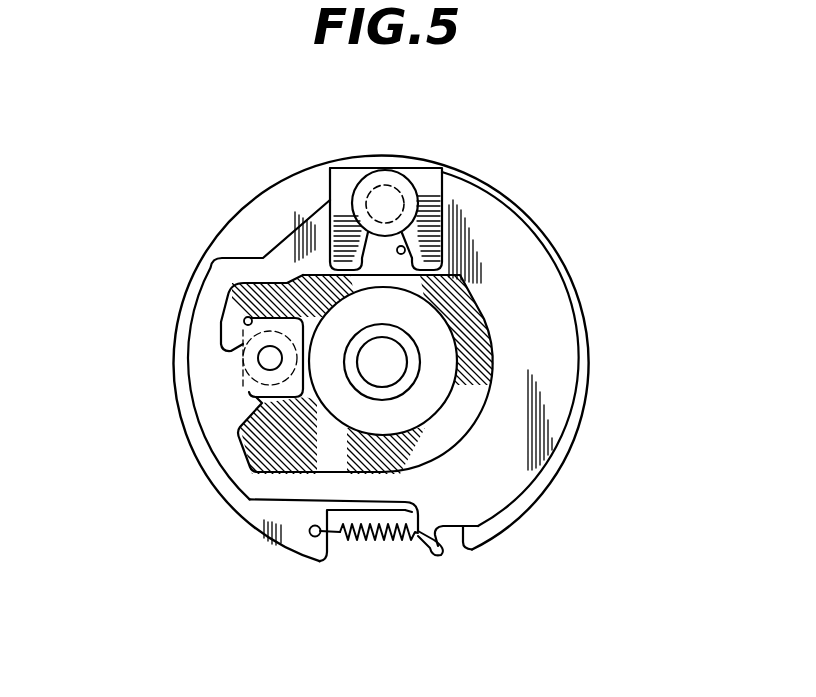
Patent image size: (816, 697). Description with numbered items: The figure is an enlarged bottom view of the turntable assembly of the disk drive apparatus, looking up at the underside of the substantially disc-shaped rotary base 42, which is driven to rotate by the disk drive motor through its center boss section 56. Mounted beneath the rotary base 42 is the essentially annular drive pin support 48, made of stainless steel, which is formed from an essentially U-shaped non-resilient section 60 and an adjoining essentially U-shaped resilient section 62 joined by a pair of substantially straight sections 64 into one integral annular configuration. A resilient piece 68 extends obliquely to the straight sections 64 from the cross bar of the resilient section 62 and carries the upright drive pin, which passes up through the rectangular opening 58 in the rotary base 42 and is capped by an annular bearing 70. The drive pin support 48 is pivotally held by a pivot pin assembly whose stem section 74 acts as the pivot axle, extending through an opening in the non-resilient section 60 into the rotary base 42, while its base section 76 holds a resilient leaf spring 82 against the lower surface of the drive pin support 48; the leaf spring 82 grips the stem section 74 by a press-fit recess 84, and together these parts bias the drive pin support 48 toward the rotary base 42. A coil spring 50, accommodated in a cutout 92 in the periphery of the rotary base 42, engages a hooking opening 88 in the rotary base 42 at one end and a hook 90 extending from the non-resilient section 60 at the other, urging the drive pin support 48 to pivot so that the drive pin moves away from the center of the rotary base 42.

The rotary base 42 is at (503, 197).
The drive pin support 48 is at (563, 288).
The spring 50 is at (362, 540).
The center boss section 56 is at (437, 398).
The rectangular opening 58 is at (244, 321).
The non-resilient section 60 is at (533, 351).
The resilient section 62 is at (372, 356).
The straight sections 64 is at (258, 268).
The resilient piece 68 is at (245, 358).
The annular bearing 70 is at (260, 372).
The stem section 74 is at (402, 197).
The base section 76 is at (397, 185).
The resilient leaf spring 82 is at (347, 193).
The press-fit recess 84 is at (405, 252).
The hooking opening 88 is at (312, 537).
The hook 90 is at (438, 547).
The cutout 92 is at (387, 537).